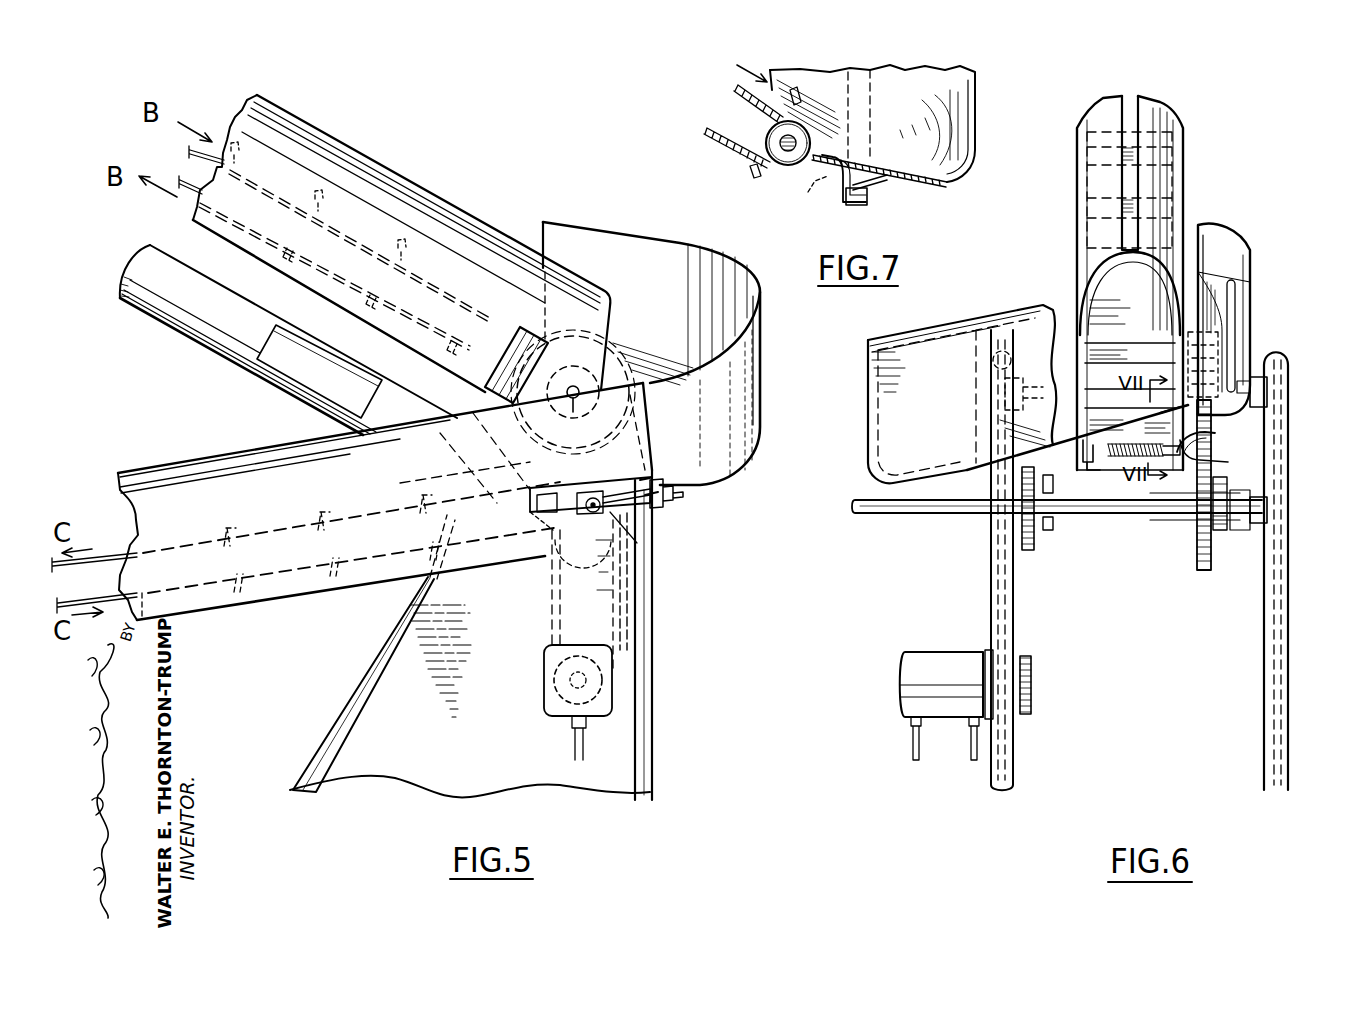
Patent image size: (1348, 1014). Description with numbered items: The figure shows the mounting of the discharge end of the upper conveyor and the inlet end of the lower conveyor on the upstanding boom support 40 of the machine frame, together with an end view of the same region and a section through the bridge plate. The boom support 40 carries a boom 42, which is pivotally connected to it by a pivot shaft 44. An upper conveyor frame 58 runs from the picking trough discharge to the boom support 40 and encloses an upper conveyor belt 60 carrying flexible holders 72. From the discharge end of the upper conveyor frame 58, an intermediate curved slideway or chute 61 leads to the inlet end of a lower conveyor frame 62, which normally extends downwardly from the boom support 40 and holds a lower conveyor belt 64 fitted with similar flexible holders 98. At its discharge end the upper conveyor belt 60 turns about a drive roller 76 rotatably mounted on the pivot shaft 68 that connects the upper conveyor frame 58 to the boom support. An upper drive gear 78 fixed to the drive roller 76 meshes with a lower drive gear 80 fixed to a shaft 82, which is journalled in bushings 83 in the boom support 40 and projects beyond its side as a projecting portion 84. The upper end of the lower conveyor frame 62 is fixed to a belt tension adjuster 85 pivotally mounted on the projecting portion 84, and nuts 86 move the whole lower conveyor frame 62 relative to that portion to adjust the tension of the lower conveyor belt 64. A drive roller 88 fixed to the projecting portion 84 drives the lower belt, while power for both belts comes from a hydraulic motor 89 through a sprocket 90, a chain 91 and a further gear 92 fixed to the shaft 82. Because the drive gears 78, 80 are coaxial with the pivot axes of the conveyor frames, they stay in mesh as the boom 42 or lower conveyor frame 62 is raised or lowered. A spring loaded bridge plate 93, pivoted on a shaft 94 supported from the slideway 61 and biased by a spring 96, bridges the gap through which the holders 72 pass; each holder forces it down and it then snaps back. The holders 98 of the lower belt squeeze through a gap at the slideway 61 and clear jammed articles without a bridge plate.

In FIG. 5, the boom support 40 is at (636, 681).
In FIG. 6, the boom support 40 is at (1288, 600).
In FIG. 5, the boom 42 is at (236, 352).
In FIG. 6, the pivot shaft 44 is at (1169, 494).
In FIG. 5, the upper conveyor frame 58 is at (410, 190).
In FIG. 6, the upper conveyor frame 58 is at (1158, 112).
In FIG. 5, the upper conveyor belt 60 is at (273, 187).
In FIG. 7, the upper conveyor belt 60 is at (737, 143).
In FIG. 6, the upper conveyor belt 60 is at (1132, 184).
In FIG. 5, the intermediate curved slideway or chute 61 is at (762, 298).
In FIG. 6, the intermediate curved slideway or chute 61 is at (1250, 242).
In FIG. 5, the lower conveyor frame 62 is at (367, 580).
In FIG. 5, the lower conveyor belt 64 is at (266, 528).
In FIG. 5, the pivot shaft 68 is at (574, 408).
In FIG. 7, the pivot shaft 68 is at (786, 152).
In FIG. 6, the pivot shaft 68 is at (1243, 392).
In FIG. 5, the flexible holders 72 is at (336, 217).
In FIG. 7, the flexible holders 72 is at (752, 176).
In FIG. 5, the drive roller 76 is at (511, 401).
In FIG. 7, the drive roller 76 is at (776, 125).
In FIG. 6, the drive roller 76 is at (1063, 327).
In FIG. 5, the upper drive gear 78 is at (600, 325).
In FIG. 6, the upper drive gear 78 is at (1210, 435).
In FIG. 5, the lower drive gear 80 is at (617, 598).
In FIG. 6, the lower drive gear 80 is at (1206, 570).
In FIG. 6, the shaft 82 is at (1138, 516).
In FIG. 6, the bushings 83 is at (1253, 524).
In FIG. 5, the projecting portion of shaft 84 is at (643, 537).
In FIG. 6, the projecting portion of shaft 84 is at (906, 515).
In FIG. 5, the belt tension adjuster 85 is at (661, 479).
In FIG. 5, the nuts 86 is at (676, 511).
In FIG. 5, the drive roller 88 is at (535, 520).
In FIG. 5, the hydraulic motor 89 is at (545, 683).
In FIG. 6, the hydraulic motor 89 is at (938, 665).
In FIG. 5, the sprocket 90 is at (556, 653).
In FIG. 6, the sprocket 90 is at (1033, 666).
In FIG. 5, the chain 91 is at (640, 583).
In FIG. 6, the chain 91 is at (1022, 620).
In FIG. 5, the further gear 92 is at (547, 583).
In FIG. 6, the further gear 92 is at (1038, 527).
In FIG. 7, the spring loaded bridge plate 93 is at (840, 162).
In FIG. 6, the spring loaded bridge plate 93 is at (1180, 436).
In FIG. 7, the shaft 94 is at (860, 204).
In FIG. 6, the shaft 94 is at (1103, 453).
In FIG. 7, the spring 96 is at (873, 179).
In FIG. 6, the spring 96 is at (1118, 458).
In FIG. 5, the flexible holders 98 is at (137, 543).